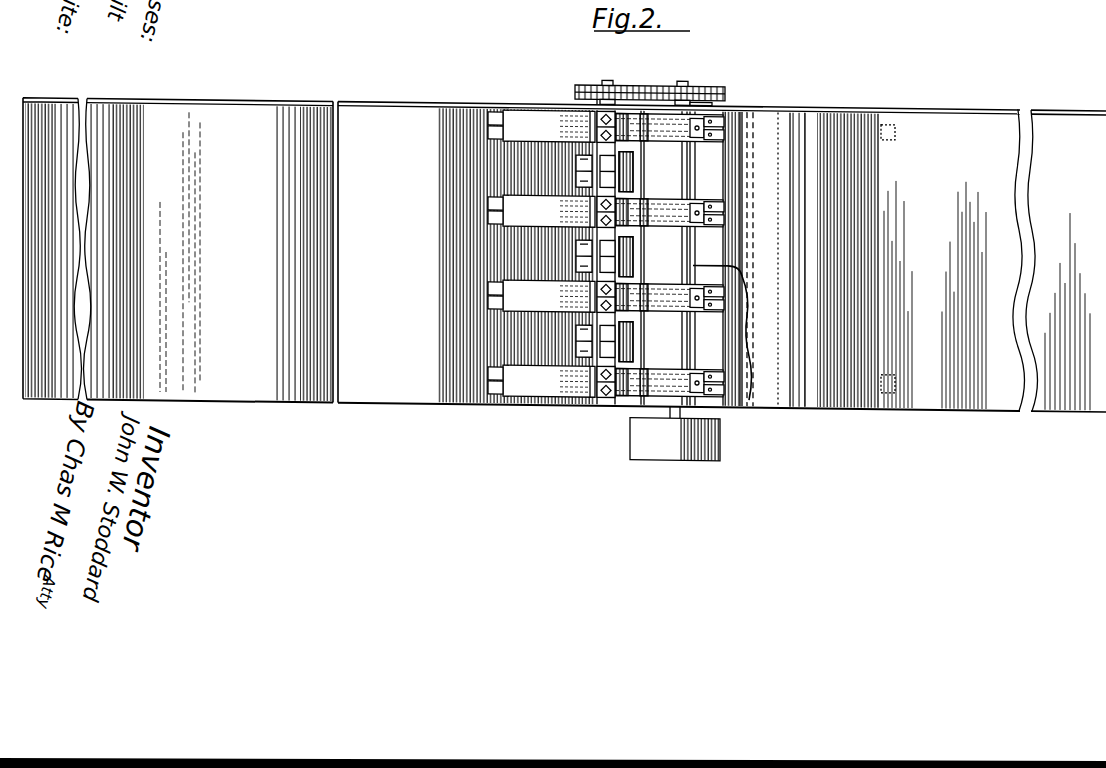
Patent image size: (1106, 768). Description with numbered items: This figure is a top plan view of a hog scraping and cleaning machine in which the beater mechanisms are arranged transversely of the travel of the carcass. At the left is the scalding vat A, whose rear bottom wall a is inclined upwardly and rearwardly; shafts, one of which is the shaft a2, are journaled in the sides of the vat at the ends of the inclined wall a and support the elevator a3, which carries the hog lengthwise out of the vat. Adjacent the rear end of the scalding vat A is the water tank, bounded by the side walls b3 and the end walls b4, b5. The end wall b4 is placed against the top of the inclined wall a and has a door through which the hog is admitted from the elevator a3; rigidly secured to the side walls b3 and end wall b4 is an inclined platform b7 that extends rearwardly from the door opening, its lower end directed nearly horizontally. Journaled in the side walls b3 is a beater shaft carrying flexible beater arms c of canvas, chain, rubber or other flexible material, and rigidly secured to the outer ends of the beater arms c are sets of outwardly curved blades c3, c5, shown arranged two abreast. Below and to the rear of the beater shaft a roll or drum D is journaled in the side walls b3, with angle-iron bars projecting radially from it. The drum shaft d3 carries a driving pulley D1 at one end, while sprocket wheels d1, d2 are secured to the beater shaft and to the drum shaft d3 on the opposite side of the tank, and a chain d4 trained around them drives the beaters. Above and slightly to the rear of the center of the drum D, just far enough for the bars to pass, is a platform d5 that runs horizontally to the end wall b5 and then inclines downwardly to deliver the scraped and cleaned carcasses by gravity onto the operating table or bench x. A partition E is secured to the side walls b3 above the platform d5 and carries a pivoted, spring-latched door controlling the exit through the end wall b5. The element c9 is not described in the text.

The scalding vat A is at (209, 251).
The rear bottom wall a is at (157, 97).
The shaft a2 is at (300, 97).
The elevator a3 is at (210, 376).
The side walls b3 is at (452, 99).
The end wall b4 is at (346, 252).
The end wall b5 is at (786, 281).
The inclined platform b7 is at (494, 256).
The flexible beater arms c is at (576, 240).
The blade c3 is at (488, 208).
The blade c5 is at (690, 286).
The arm c9 is at (726, 198).
The sprocket wheel d1 is at (597, 78).
The sprocket wheel d2 is at (700, 79).
The drum shaft d3 is at (722, 93).
The chain d4 is at (665, 77).
The platform d5 is at (748, 152).
The roll, drum or cylinder D is at (668, 258).
The driving pulley D1 is at (675, 433).
The partition E is at (745, 233).
The operating table or bench x is at (992, 260).